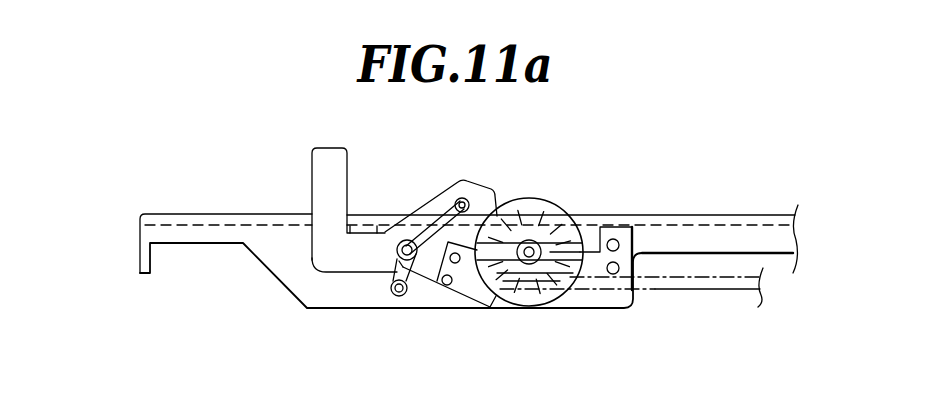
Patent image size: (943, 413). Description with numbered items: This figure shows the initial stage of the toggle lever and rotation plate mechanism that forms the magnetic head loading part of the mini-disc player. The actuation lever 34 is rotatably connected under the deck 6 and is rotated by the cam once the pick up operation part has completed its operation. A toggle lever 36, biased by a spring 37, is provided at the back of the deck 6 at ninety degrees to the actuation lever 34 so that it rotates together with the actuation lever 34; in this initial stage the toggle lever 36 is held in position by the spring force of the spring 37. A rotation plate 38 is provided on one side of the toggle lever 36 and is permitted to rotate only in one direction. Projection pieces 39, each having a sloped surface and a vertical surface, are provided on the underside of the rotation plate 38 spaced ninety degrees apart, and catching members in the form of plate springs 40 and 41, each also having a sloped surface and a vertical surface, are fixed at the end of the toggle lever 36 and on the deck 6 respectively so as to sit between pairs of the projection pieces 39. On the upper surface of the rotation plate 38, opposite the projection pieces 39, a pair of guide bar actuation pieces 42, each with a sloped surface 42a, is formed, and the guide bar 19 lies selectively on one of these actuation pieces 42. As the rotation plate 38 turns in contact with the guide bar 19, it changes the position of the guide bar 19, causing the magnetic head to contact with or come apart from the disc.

The deck 6 is at (185, 222).
The guide bar 19 is at (685, 282).
The actuation lever 34 is at (368, 230).
The toggle lever 36 is at (335, 257).
The spring 37 is at (380, 294).
The rotation plate 38 is at (563, 205).
The projection pieces 39 is at (508, 221).
The plate spring 40 is at (473, 290).
The plate spring 41 is at (625, 247).
The guide bar actuation pieces 42 is at (505, 306).
The sloped surface 42a is at (570, 290).